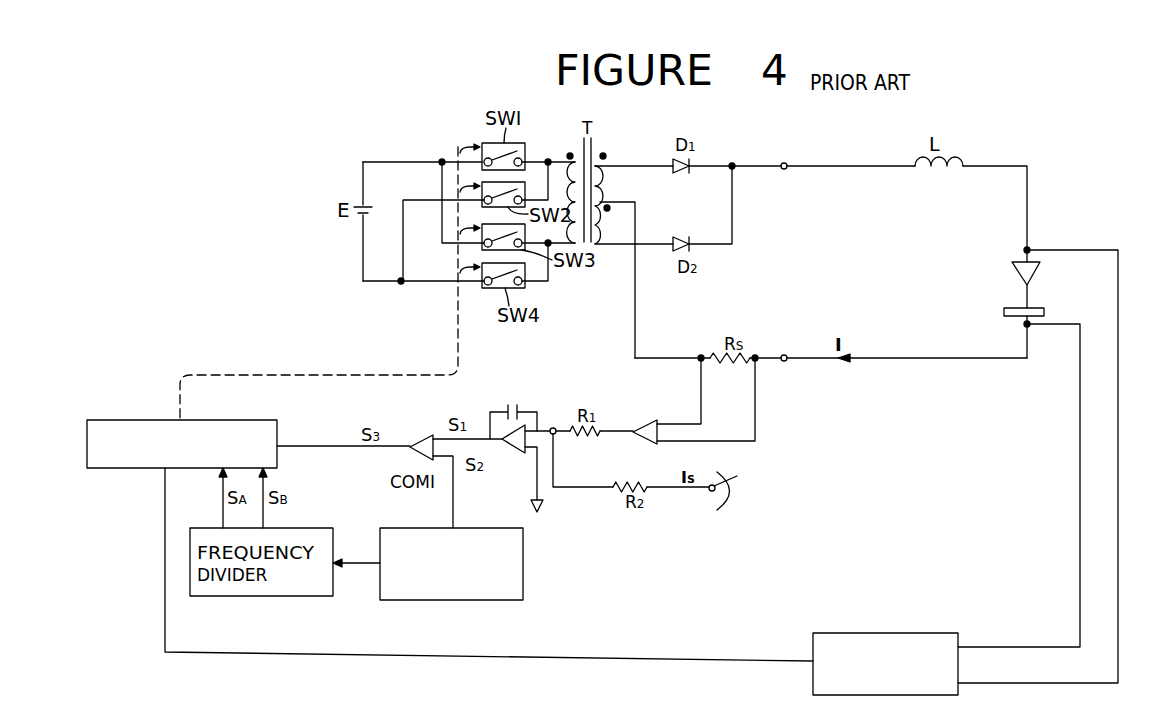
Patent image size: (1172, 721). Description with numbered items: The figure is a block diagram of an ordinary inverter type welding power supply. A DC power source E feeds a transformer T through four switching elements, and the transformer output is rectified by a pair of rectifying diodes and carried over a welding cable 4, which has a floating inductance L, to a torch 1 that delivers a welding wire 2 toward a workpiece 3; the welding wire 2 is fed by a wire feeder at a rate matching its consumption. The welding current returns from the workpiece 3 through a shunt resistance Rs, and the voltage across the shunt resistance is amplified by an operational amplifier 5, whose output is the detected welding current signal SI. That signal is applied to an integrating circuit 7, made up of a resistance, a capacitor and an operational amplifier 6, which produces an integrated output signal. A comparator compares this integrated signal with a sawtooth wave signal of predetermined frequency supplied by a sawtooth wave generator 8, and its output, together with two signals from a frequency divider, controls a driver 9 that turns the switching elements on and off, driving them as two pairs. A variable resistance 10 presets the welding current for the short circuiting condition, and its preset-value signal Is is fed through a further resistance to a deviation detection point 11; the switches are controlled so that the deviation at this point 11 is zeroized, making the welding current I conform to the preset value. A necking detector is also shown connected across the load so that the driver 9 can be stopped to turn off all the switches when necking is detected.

The torch 1 is at (1013, 272).
The welding wire 2 is at (900, 633).
The workpiece 3 is at (1046, 312).
The welding cable 4 is at (862, 166).
The operational amplifier 5 is at (647, 421).
The operational amplifier 6 is at (509, 453).
The integrating circuit 7 is at (556, 420).
The sawtooth wave generator 8 is at (495, 528).
The driver 9 is at (250, 420).
The variable resistance 10 is at (739, 480).
The deviation detection point 11 is at (556, 435).